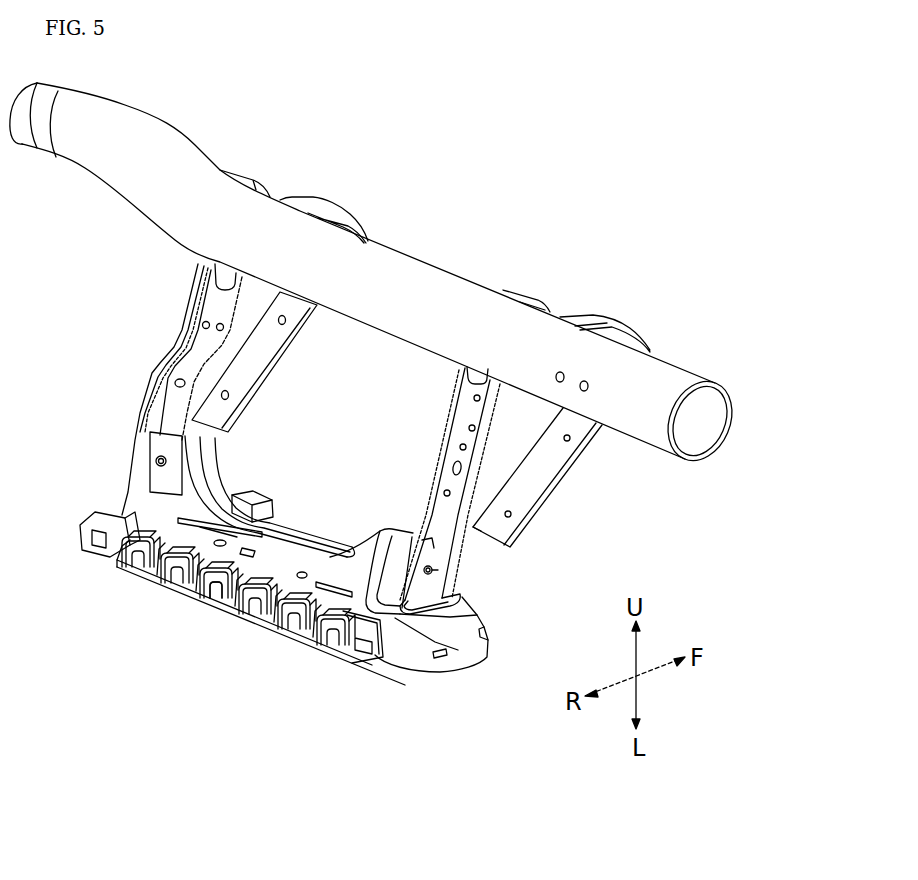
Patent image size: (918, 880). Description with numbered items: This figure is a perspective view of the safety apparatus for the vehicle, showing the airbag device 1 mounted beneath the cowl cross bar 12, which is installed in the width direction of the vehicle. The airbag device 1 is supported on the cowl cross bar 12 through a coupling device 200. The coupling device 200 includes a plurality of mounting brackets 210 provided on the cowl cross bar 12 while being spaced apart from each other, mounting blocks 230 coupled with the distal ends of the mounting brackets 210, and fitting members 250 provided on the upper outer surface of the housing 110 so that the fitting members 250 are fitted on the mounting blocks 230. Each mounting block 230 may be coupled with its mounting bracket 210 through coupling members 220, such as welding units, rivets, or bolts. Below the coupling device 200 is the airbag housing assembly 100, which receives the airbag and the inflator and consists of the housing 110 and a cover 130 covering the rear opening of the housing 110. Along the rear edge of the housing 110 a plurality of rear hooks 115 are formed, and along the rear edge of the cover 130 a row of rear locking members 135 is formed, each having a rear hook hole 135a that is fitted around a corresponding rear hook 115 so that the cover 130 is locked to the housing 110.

The airbag device 1 is at (77, 597).
The cowl cross bar 12 is at (410, 282).
The airbag housing assembly 100 is at (251, 623).
The housing 110 is at (300, 592).
The rear hooks 115 is at (200, 606).
The cover 130 is at (306, 657).
The rear locking members 135 is at (207, 580).
The rear hook holes 135a is at (220, 617).
The coupling device 200 is at (488, 457).
The mounting brackets 210 is at (143, 402).
The coupling members 220 is at (150, 461).
The mounting blocks 230 is at (135, 452).
The fitting members 250 is at (172, 402).